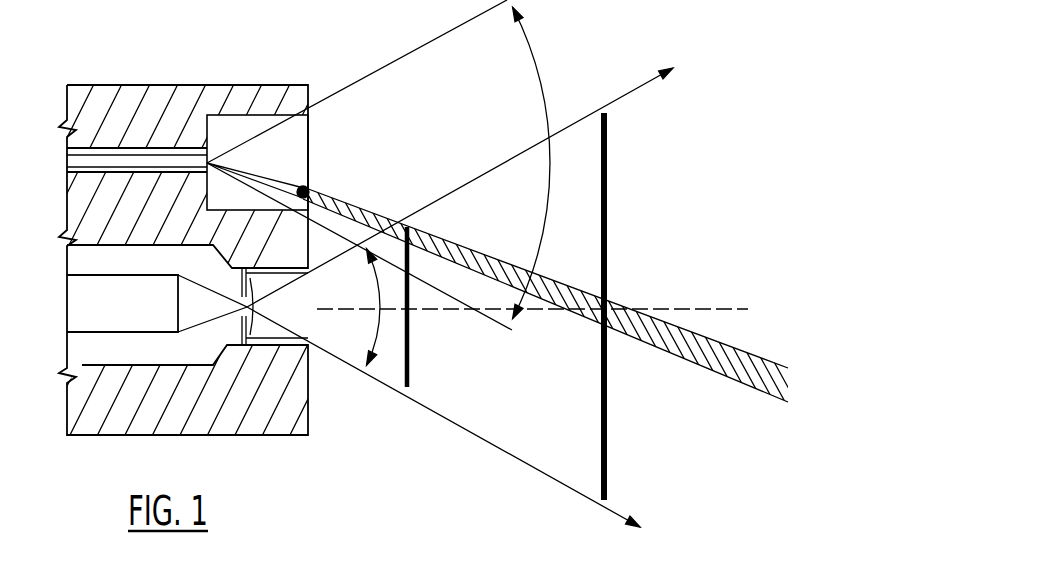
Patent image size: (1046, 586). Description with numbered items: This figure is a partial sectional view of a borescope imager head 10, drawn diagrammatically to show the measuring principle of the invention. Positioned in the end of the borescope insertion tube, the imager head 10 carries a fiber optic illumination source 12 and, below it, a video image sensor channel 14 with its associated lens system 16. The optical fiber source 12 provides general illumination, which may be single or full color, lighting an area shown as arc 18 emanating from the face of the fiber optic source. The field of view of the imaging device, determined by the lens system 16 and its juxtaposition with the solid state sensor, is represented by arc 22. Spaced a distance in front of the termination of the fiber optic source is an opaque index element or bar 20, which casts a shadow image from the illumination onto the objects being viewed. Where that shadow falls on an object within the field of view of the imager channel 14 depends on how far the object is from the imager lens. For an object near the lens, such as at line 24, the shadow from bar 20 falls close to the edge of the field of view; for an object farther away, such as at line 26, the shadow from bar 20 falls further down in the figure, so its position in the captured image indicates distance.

The borescope imager head 10 is at (147, 84).
The fiber optic illumination source 12 is at (165, 160).
The video image sensor channel 14 is at (121, 306).
The lens system 16 is at (260, 325).
The arc 18 is at (537, 63).
The opaque index element or bar 20 is at (307, 186).
The arc 22 is at (385, 296).
The line 24 is at (411, 347).
The line 26 is at (609, 407).